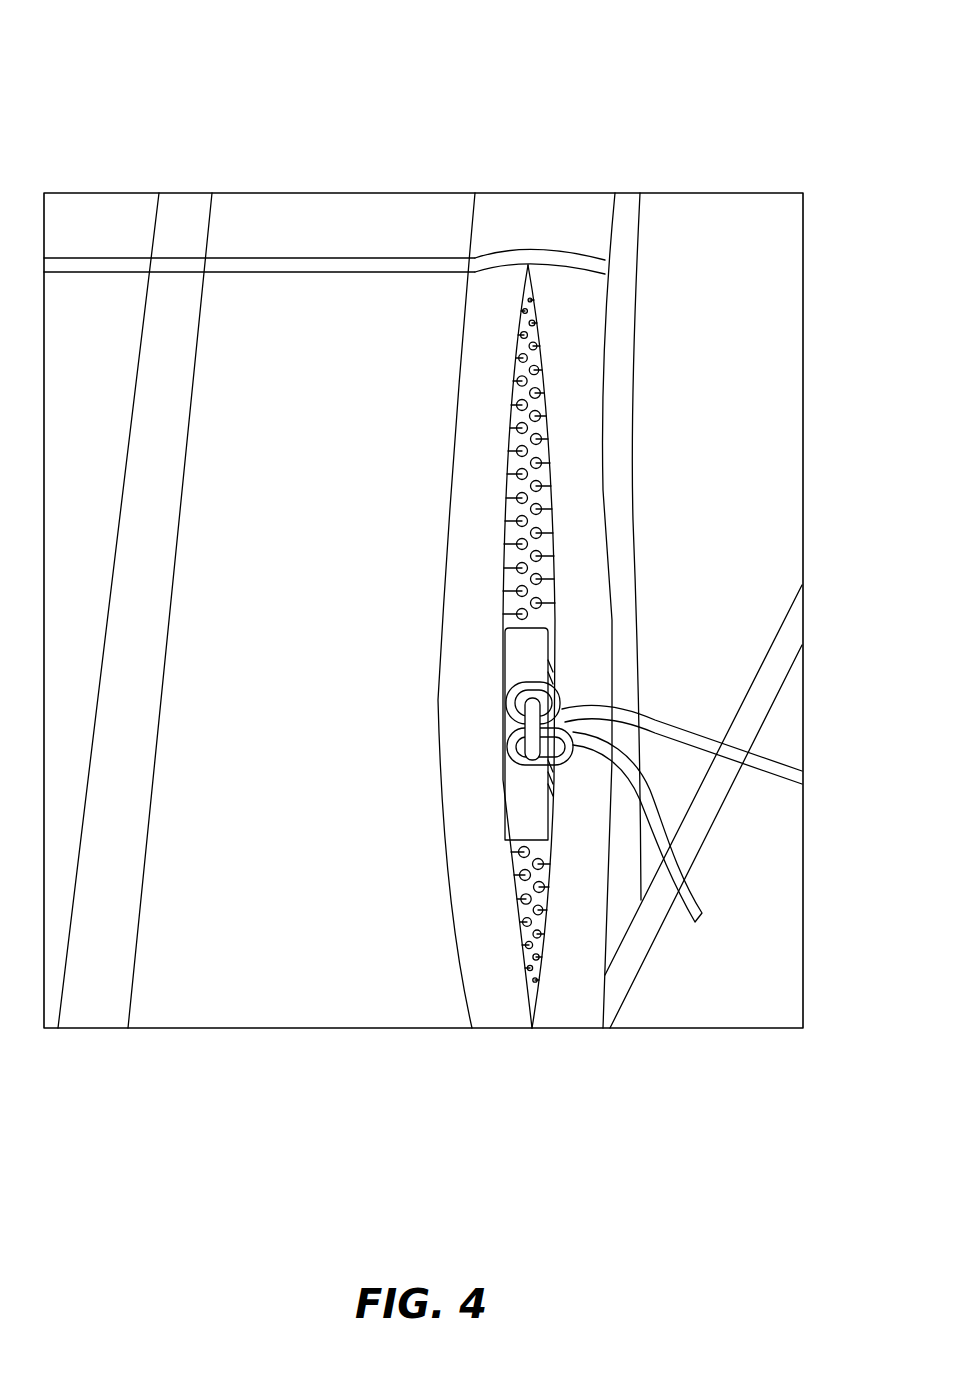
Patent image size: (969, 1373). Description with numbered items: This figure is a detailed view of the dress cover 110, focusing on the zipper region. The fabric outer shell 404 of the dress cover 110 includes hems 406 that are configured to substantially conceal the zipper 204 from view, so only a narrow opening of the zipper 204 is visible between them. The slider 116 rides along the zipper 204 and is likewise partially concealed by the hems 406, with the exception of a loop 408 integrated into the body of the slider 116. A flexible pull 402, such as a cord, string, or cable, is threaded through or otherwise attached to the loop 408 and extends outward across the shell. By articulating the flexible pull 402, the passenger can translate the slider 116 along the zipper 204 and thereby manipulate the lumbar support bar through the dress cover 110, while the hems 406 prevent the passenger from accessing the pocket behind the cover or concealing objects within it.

The dress cover 110 is at (84, 92).
The fabric outer shell 404 is at (292, 413).
The zipper 204 is at (512, 410).
The hems 406 is at (580, 600).
The slider 116 is at (517, 650).
The loop 408 is at (535, 727).
The flexible pull 402 is at (585, 760).